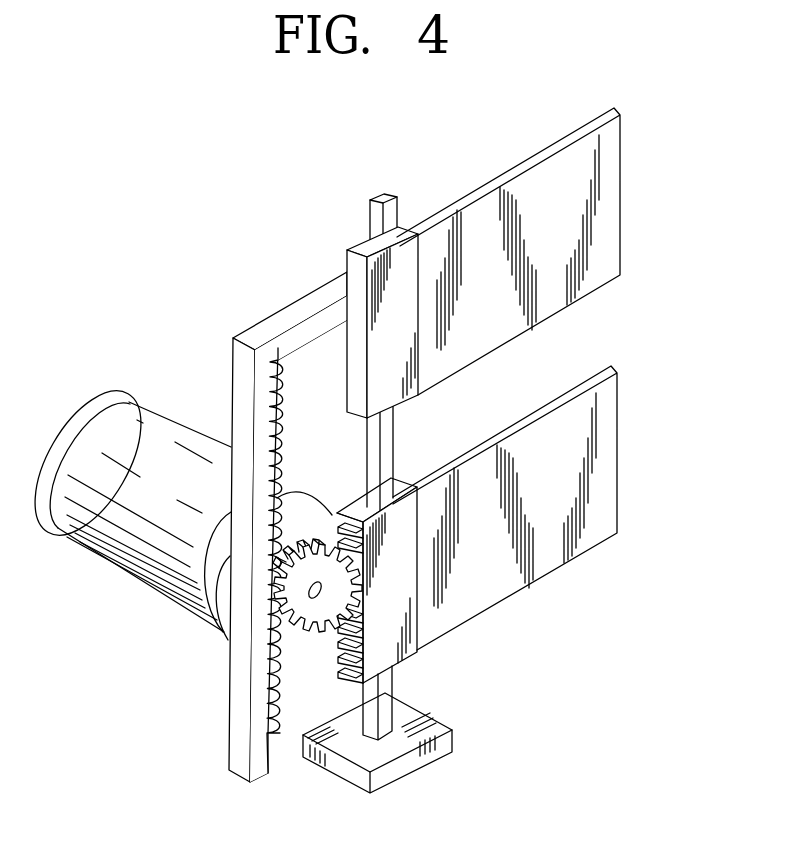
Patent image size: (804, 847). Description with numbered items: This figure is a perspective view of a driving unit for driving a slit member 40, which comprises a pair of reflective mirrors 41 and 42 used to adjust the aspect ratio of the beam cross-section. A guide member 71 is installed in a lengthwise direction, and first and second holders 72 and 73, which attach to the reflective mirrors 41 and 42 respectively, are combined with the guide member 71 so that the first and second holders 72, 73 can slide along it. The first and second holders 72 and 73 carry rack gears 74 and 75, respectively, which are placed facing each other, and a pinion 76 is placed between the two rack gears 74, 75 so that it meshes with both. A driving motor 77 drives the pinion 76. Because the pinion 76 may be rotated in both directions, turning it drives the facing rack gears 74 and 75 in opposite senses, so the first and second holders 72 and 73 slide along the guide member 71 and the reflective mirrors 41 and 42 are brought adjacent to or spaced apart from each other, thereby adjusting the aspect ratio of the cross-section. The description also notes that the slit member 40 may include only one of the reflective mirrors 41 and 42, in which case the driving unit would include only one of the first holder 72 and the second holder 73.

The slit member 40 is at (577, 379).
The reflective mirror 41 is at (608, 253).
The reflective mirror 42 is at (608, 402).
The guide member 71 is at (385, 195).
The first holder 72 is at (363, 250).
The second holder 73 is at (418, 649).
The rack gear 74 is at (279, 458).
The rack gear 75 is at (334, 660).
The pinion 76 is at (290, 610).
The driving motor 77 is at (141, 577).